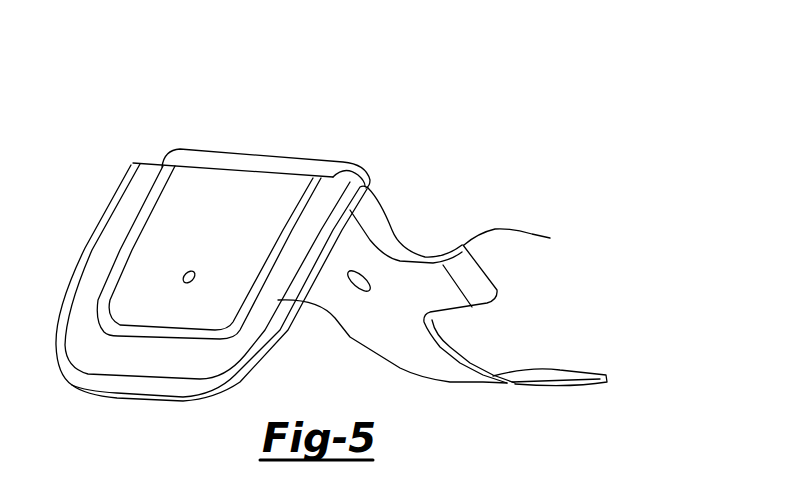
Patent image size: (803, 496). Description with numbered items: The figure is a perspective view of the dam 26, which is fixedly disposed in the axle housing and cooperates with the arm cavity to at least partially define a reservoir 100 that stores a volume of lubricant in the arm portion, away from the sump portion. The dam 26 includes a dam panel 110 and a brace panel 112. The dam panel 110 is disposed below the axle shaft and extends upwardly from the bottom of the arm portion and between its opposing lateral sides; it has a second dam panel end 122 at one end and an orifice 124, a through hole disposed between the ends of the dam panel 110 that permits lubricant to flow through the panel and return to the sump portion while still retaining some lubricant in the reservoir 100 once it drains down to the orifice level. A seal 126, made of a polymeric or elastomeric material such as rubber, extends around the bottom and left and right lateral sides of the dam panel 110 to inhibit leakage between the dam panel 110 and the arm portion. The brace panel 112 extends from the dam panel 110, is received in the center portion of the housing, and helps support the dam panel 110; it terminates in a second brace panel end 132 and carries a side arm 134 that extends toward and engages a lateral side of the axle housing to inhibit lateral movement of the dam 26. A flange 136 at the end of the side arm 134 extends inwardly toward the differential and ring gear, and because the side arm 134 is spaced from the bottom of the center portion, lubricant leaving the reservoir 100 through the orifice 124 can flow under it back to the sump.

The dam 26 is at (335, 88).
The reservoir 100 is at (124, 391).
The dam panel 110 is at (218, 227).
The brace panel 112 is at (372, 234).
The second dam panel end 122 is at (368, 188).
The orifice 124 is at (190, 272).
The seal 126 is at (140, 161).
The second brace panel end 132 is at (607, 379).
The side arm 134 is at (417, 252).
The flange 136 is at (550, 238).